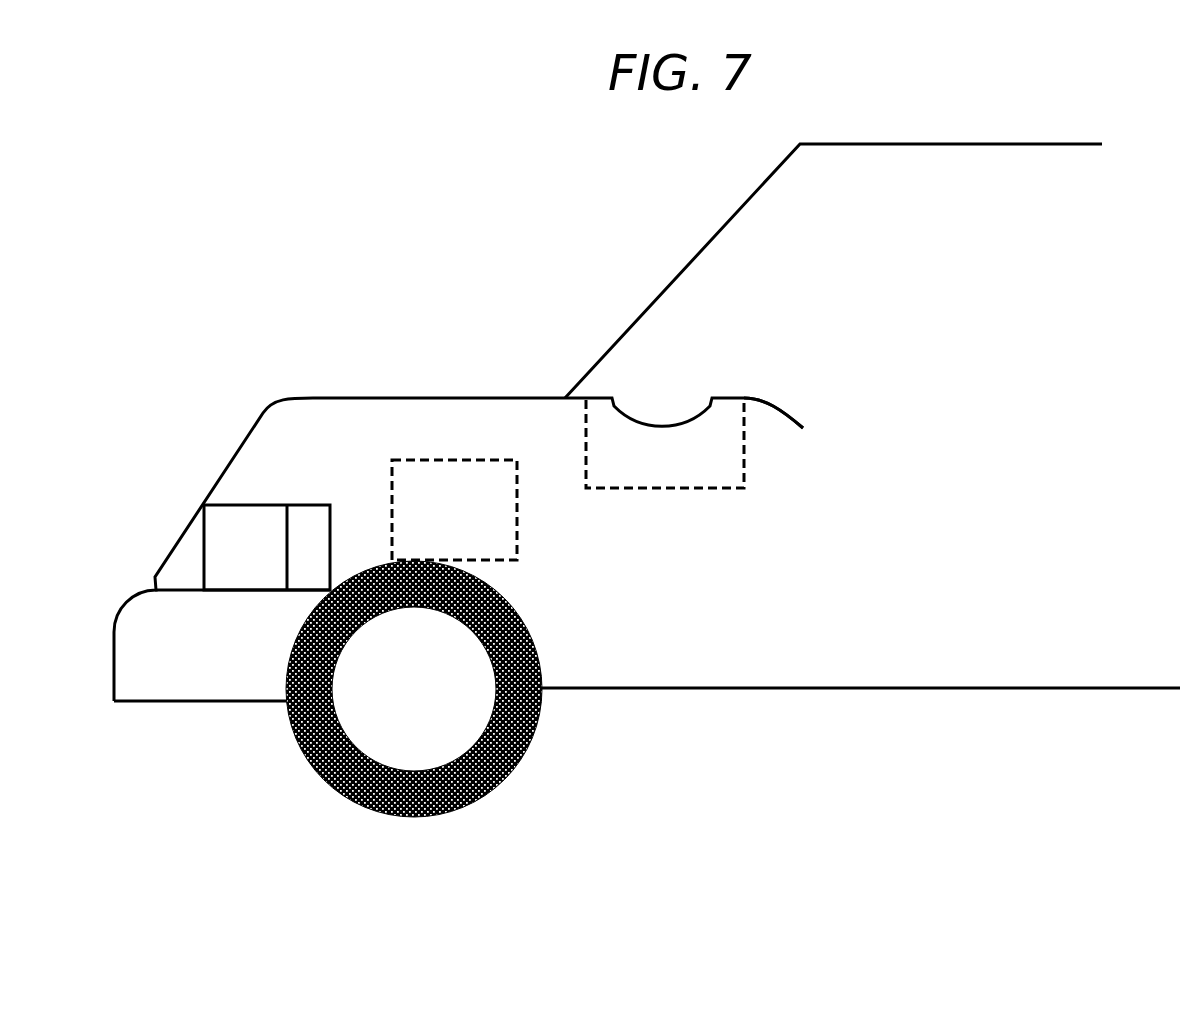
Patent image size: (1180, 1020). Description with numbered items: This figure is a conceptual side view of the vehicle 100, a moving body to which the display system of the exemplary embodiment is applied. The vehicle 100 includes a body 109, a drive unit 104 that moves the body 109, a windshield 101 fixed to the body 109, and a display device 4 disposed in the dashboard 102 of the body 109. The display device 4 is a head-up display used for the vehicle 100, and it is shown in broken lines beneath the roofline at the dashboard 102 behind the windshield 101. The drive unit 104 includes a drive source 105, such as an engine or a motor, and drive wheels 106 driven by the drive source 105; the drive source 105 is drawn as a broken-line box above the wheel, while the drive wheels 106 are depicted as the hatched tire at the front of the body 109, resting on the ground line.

The vehicle 100 is at (177, 702).
The windshield 101 is at (723, 219).
The dashboard 102 is at (768, 398).
The display device 4 is at (682, 489).
The drive unit 104 is at (474, 642).
The drive source 105 is at (517, 540).
The drive wheels 106 is at (538, 710).
The body 109 is at (852, 689).